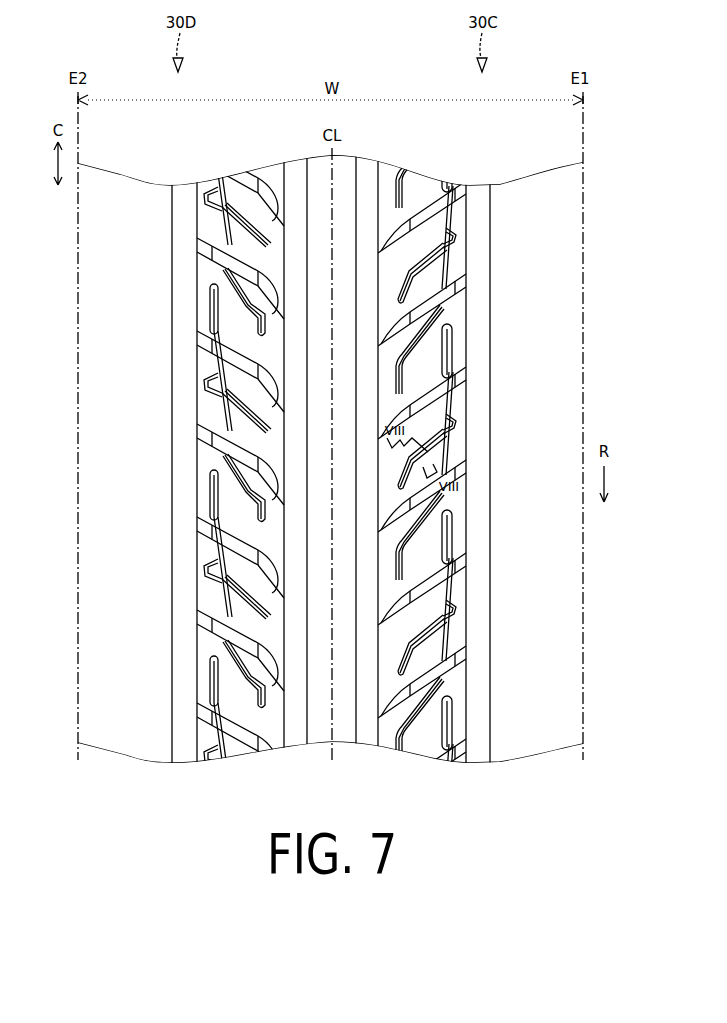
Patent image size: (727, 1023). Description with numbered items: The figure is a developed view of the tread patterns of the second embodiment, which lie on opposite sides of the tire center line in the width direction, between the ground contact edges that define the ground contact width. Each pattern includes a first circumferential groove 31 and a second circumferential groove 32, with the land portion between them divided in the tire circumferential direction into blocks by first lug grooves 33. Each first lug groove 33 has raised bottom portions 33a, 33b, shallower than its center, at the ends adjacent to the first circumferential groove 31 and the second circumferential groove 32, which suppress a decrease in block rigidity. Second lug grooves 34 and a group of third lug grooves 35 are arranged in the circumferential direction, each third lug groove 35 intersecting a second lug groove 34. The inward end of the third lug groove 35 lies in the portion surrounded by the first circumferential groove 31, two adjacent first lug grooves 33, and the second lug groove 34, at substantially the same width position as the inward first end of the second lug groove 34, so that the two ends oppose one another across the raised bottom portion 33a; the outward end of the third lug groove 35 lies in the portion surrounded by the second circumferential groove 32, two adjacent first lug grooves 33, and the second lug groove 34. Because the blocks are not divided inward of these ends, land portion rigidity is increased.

The first circumferential groove 31 is at (300, 283).
The second circumferential groove 32 is at (180, 233).
The first lug groove 33 is at (420, 403).
The raised bottom portion 33a is at (395, 528).
The raised bottom portion 33b is at (380, 563).
The second lug groove 34 is at (378, 563).
The third lug groove 35 is at (403, 460).